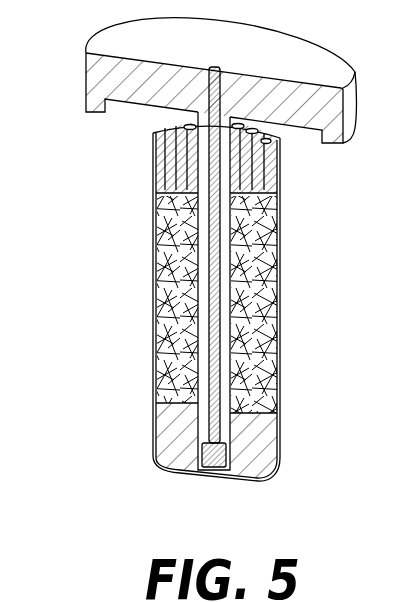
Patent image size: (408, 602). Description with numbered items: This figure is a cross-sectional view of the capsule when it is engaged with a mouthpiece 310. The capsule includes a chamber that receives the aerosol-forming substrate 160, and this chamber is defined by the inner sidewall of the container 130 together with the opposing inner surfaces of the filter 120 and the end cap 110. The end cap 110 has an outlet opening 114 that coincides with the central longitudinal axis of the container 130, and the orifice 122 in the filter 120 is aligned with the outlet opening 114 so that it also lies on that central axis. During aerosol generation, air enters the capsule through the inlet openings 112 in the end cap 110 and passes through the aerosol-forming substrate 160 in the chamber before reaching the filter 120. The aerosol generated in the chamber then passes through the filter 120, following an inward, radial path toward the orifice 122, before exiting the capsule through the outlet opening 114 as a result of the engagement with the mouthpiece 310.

The mouthpiece 310 is at (88, 53).
The end cap 110 is at (202, 150).
The outlet opening 114 is at (265, 162).
The inlet openings 112 is at (265, 202).
The container 130 is at (153, 272).
The aerosol-forming substrate 160 is at (278, 311).
The filter 120 is at (163, 423).
The orifice 122 is at (252, 432).